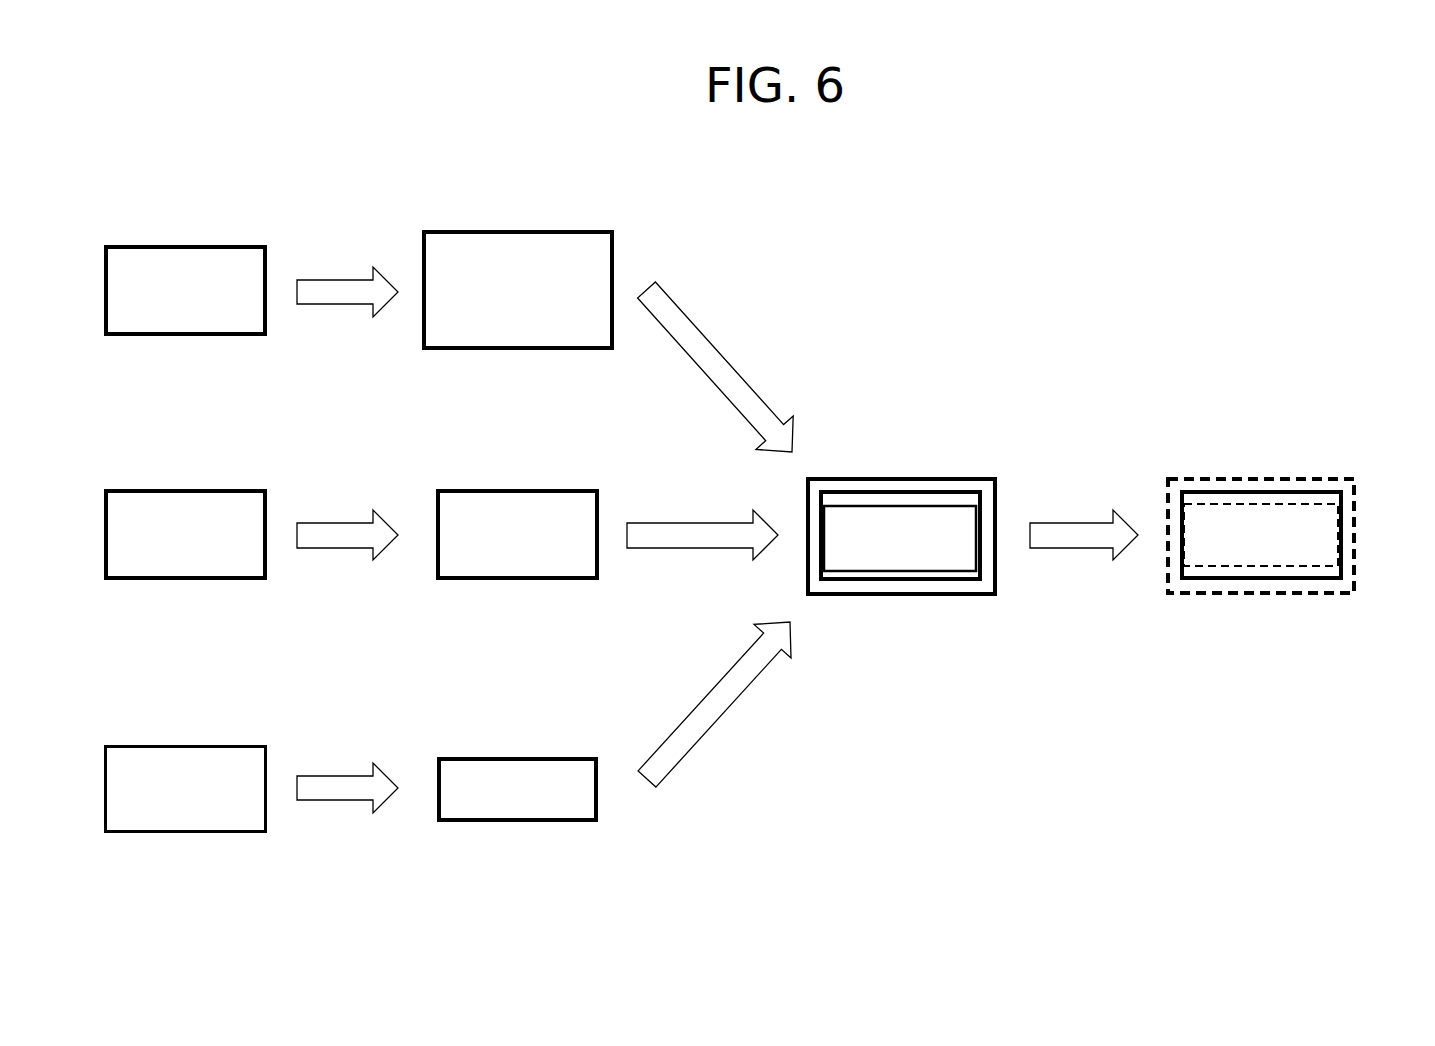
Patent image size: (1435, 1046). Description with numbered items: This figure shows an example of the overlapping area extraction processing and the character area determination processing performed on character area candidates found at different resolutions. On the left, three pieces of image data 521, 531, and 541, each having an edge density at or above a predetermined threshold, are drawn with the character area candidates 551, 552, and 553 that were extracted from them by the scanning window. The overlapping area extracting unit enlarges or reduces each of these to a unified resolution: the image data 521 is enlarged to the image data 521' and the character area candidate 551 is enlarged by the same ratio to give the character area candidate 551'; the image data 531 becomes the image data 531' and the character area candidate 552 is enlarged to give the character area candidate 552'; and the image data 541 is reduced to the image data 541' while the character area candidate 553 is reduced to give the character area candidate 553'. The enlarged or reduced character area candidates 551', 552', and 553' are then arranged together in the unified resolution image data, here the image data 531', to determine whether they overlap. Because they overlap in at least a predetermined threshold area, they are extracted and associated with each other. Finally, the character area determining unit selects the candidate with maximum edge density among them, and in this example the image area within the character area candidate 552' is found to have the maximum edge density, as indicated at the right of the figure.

The image data 521 is at (183, 274).
The image data of unified resolution 521' is at (516, 273).
The image data 531 is at (184, 522).
The image data of unified resolution 531' is at (888, 516).
The image data 541 is at (184, 785).
The image data of unified resolution 541' is at (516, 777).
The character area candidate 551 is at (219, 276).
The enlarged character area candidate 551' is at (925, 407).
The character area candidate 552 is at (219, 521).
The enlarged character area candidate 552' is at (915, 503).
The character area candidate 553 is at (220, 775).
The reduced character area candidate 553' is at (888, 624).